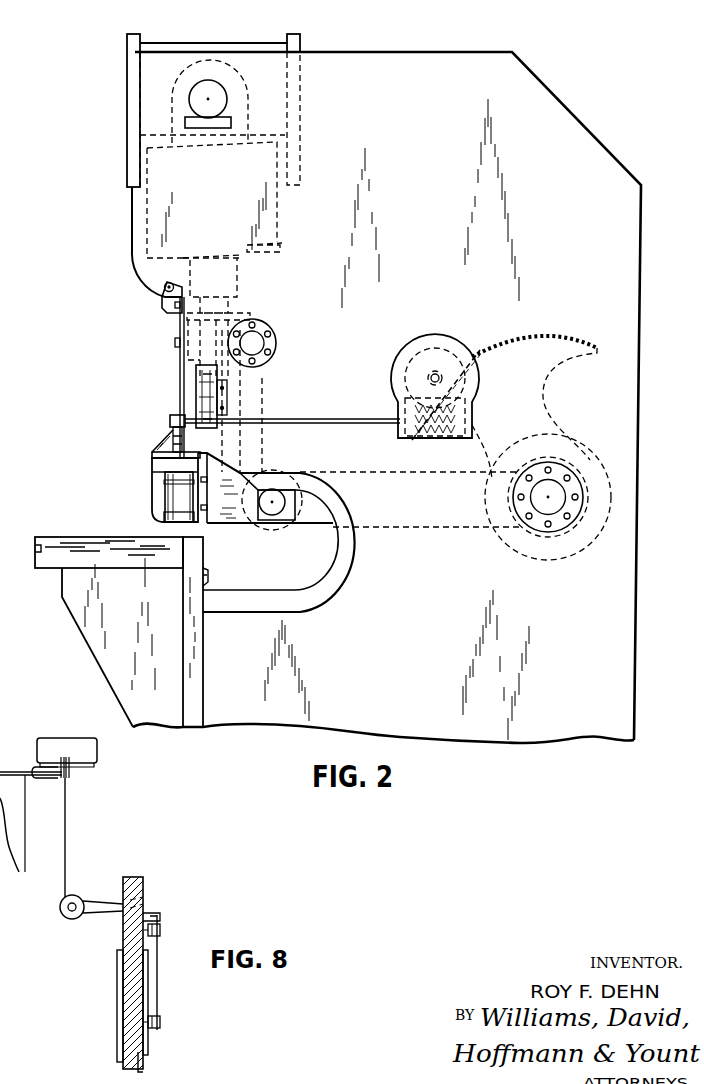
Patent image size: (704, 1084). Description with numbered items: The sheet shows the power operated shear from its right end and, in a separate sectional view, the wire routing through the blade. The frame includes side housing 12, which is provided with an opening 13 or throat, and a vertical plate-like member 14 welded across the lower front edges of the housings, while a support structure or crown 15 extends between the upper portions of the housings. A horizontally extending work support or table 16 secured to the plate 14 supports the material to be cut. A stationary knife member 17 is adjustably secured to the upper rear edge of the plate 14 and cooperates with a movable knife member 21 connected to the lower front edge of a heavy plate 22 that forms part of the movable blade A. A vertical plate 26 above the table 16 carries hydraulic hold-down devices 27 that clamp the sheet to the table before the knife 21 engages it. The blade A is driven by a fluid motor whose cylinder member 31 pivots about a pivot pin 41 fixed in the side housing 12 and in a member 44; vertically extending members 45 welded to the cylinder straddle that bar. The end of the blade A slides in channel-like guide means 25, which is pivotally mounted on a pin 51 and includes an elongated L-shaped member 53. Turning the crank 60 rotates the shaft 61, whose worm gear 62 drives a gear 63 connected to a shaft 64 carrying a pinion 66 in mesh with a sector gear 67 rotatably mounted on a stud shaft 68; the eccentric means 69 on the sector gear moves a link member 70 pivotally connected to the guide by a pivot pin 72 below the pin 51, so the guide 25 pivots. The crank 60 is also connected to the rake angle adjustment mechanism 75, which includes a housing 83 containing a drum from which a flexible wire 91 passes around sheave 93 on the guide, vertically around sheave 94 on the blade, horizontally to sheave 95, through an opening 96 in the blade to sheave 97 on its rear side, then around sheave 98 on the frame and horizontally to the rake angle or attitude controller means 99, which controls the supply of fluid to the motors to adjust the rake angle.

In FIG. 2, the side housing 12 is at (408, 58).
In FIG. 2, the opening 13 is at (330, 568).
In FIG. 2, the vertical plate-like member 14 is at (195, 672).
In FIG. 2, the support structure or crown 15 is at (300, 34).
In FIG. 2, the work support or table 16 is at (95, 535).
In FIG. 2, the stationary knife member 17 is at (208, 572).
In FIG. 8, the movable knife member 21 is at (144, 1062).
In FIG. 2, the heavy plate 22 is at (214, 258).
In FIG. 8, the heavy plate 22 is at (128, 1049).
In FIG. 2, the guide means 25 is at (272, 300).
In FIG. 8, the guide means 25 is at (120, 1008).
In FIG. 2, the vertical plate 26 is at (178, 322).
In FIG. 2, the hydraulic hold-down device 27 is at (175, 500).
In FIG. 2, the cylinder member 31 is at (282, 242).
In FIG. 2, the pivot pin 41 is at (220, 97).
In FIG. 2, the member 44 is at (247, 45).
In FIG. 2, the vertically extending members 45 is at (185, 55).
In FIG. 2, the pin 51 is at (253, 343).
In FIG. 2, the L-shaped member 53 is at (262, 378).
In FIG. 2, the crank 60 is at (172, 420).
In FIG. 2, the shaft 61 is at (320, 419).
In FIG. 2, the worm gear 62 is at (430, 434).
In FIG. 2, the gear 63 is at (450, 340).
In FIG. 2, the shaft 64 is at (428, 378).
In FIG. 2, the pinion 66 is at (462, 360).
In FIG. 2, the sector gear 67 is at (590, 346).
In FIG. 2, the stud shaft 68 is at (562, 488).
In FIG. 2, the eccentric means 69 is at (530, 522).
In FIG. 2, the link member 70 is at (438, 527).
In FIG. 2, the pivot pin 72 is at (276, 512).
In FIG. 2, the rake angle adjustment mechanism 75 is at (190, 385).
In FIG. 2, the housing 83 is at (207, 400).
In FIG. 8, the flexible wire 91 is at (70, 815).
In FIG. 8, the sheave 93 is at (160, 1020).
In FIG. 8, the sheave 94 is at (160, 932).
In FIG. 8, the sheave 95 is at (158, 915).
In FIG. 8, the opening 96 is at (145, 900).
In FIG. 8, the sheave 97 is at (64, 917).
In FIG. 8, the sheave 98 is at (66, 779).
In FIG. 8, the rake angle or attitude controller means 99 is at (48, 738).
In FIG. 8, the blade A is at (114, 975).